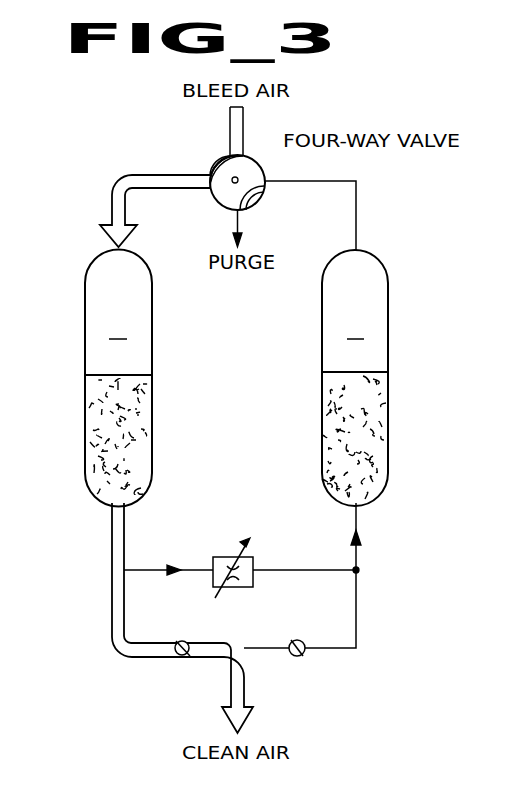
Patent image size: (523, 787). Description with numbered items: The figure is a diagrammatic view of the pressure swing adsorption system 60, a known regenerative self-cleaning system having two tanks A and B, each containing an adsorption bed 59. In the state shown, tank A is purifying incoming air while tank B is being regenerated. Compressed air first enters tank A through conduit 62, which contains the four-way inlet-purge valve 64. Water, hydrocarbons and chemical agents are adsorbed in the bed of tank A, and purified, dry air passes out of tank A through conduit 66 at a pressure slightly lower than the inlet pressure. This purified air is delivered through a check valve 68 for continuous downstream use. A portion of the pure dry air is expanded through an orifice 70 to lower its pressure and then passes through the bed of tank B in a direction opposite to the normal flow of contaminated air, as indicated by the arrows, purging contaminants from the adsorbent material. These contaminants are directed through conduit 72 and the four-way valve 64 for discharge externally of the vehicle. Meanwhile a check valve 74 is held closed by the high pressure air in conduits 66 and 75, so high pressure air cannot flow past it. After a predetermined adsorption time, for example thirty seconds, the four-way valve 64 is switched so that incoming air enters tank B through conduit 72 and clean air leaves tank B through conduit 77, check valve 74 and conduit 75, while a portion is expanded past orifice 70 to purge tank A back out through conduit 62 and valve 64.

The adsorption bed 59 is at (322, 355).
The pressure swing adsorption system 60 is at (272, 133).
The conduit 62 is at (228, 118).
The four-way inlet-purge valve 64 is at (226, 165).
The conduit 66 is at (112, 597).
The check valve 68 is at (178, 656).
The orifice 70 is at (233, 557).
The conduit 72 is at (357, 211).
The check valve 74 is at (300, 641).
The conduit 75 is at (245, 697).
The conduit 77 is at (358, 583).